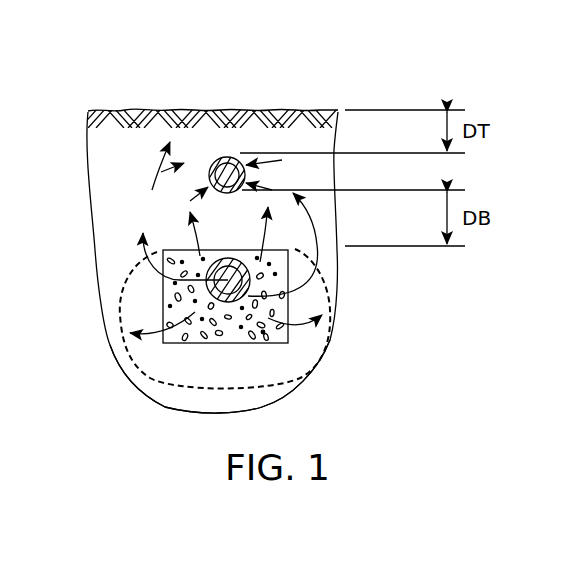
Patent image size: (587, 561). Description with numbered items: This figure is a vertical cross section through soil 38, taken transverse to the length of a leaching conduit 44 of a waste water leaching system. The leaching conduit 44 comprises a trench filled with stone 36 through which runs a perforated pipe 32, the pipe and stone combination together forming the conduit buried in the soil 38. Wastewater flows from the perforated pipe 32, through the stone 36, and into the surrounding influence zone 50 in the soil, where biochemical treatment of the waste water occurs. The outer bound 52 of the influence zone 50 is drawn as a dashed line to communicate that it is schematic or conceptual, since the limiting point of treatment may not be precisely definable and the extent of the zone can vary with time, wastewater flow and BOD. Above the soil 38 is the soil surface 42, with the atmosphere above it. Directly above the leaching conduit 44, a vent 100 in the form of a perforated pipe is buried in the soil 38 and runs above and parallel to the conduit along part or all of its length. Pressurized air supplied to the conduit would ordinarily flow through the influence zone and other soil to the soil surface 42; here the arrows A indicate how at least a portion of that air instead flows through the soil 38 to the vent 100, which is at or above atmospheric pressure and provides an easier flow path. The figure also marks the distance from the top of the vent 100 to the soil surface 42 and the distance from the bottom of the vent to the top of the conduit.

The vent 100 is at (222, 160).
The soil surface 42 is at (286, 110).
The soil 38 is at (138, 160).
The arrows indicating air flow A is at (152, 190).
The perforated pipe 32 is at (251, 277).
The leaching conduit 44 is at (295, 304).
The influence zone 50 is at (140, 300).
The outer bound of influence zone 52 is at (140, 373).
The stone 36 is at (263, 332).